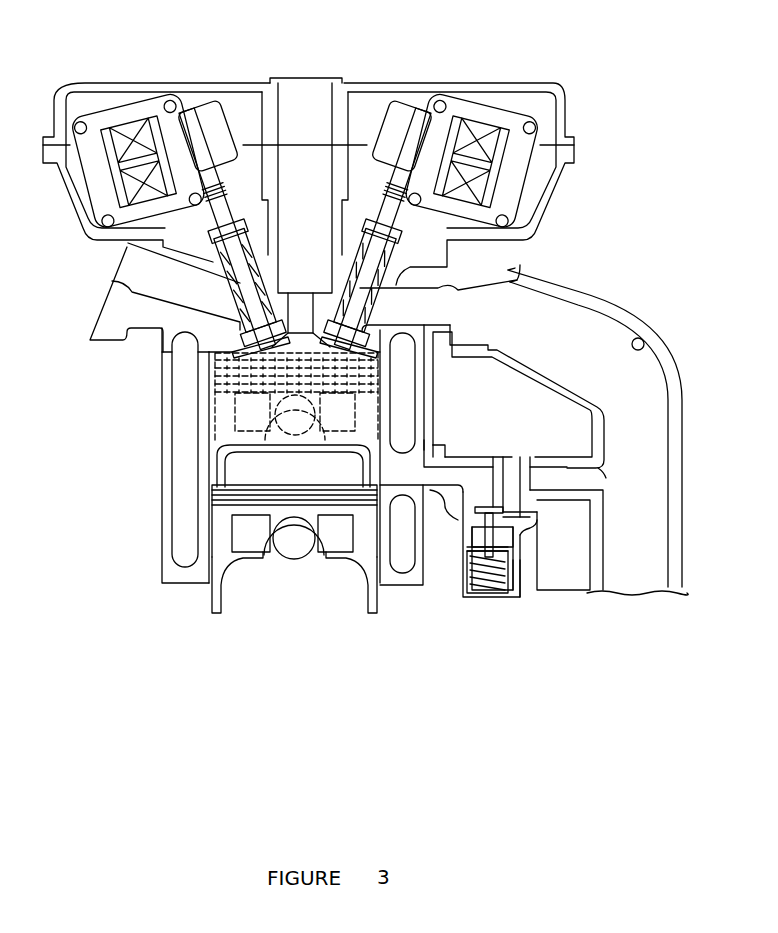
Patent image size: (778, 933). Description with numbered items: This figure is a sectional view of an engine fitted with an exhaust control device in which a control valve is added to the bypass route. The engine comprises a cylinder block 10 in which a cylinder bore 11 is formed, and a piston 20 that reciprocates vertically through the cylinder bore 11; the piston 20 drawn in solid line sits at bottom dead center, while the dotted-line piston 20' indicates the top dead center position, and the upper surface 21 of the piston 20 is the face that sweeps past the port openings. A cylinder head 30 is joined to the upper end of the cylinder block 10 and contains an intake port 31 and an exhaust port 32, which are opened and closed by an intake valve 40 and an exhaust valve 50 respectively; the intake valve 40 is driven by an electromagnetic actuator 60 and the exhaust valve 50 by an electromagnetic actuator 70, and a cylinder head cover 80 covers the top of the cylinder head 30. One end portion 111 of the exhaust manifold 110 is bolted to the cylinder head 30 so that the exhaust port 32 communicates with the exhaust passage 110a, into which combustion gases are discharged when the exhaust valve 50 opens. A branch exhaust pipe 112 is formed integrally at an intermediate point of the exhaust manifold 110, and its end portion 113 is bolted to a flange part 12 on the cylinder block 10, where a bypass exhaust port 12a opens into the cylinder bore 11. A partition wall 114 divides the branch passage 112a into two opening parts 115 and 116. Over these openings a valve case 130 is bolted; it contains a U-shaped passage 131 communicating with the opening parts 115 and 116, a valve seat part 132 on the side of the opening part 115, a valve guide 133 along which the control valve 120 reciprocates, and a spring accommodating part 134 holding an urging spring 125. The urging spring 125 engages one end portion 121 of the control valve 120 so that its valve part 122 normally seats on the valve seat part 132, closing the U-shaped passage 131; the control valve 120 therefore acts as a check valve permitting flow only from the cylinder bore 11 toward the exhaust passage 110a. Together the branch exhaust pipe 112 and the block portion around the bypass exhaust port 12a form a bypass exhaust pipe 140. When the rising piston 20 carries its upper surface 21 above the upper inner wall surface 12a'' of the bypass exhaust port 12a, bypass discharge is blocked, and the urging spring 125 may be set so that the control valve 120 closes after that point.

The cylinder block 10 is at (160, 556).
The cylinder bore 11 is at (209, 525).
The flange part 12 is at (433, 445).
The bypass exhaust port 12a is at (454, 424).
The upper inner wall surface 12a'' is at (449, 410).
The piston 20 is at (294, 565).
The piston at top dead center 20' is at (247, 396).
The upper surface 21 is at (240, 470).
The cylinder head 30 is at (162, 333).
The intake port 31 is at (112, 281).
The exhaust port 32 is at (472, 348).
The intake valve 40 is at (150, 240).
The exhaust valve 50 is at (540, 197).
The electromagnetic actuator 60 is at (141, 94).
The electromagnetic actuator 70 is at (470, 100).
The cylinder head cover 80 is at (367, 85).
The exhaust manifold 110 is at (598, 300).
The exhaust passage 110a is at (638, 340).
The one end portion 111 is at (516, 273).
The branch exhaust pipe 112 is at (558, 455).
The branch passage 112a is at (605, 468).
The end portion 113 is at (442, 450).
The partition wall 114 is at (520, 457).
The opening part 115 is at (498, 453).
The opening part 116 is at (535, 453).
The control valve 120 is at (457, 530).
The one end portion 121 is at (505, 550).
The valve part 122 is at (537, 512).
The urging spring 125 is at (500, 597).
The valve case 130 is at (525, 611).
The U-shaped passage 131 is at (530, 530).
The valve seat part 132 is at (452, 514).
The valve guide 133 is at (498, 538).
The spring accommodating part 134 is at (520, 593).
The bypass exhaust pipe 140 is at (443, 512).